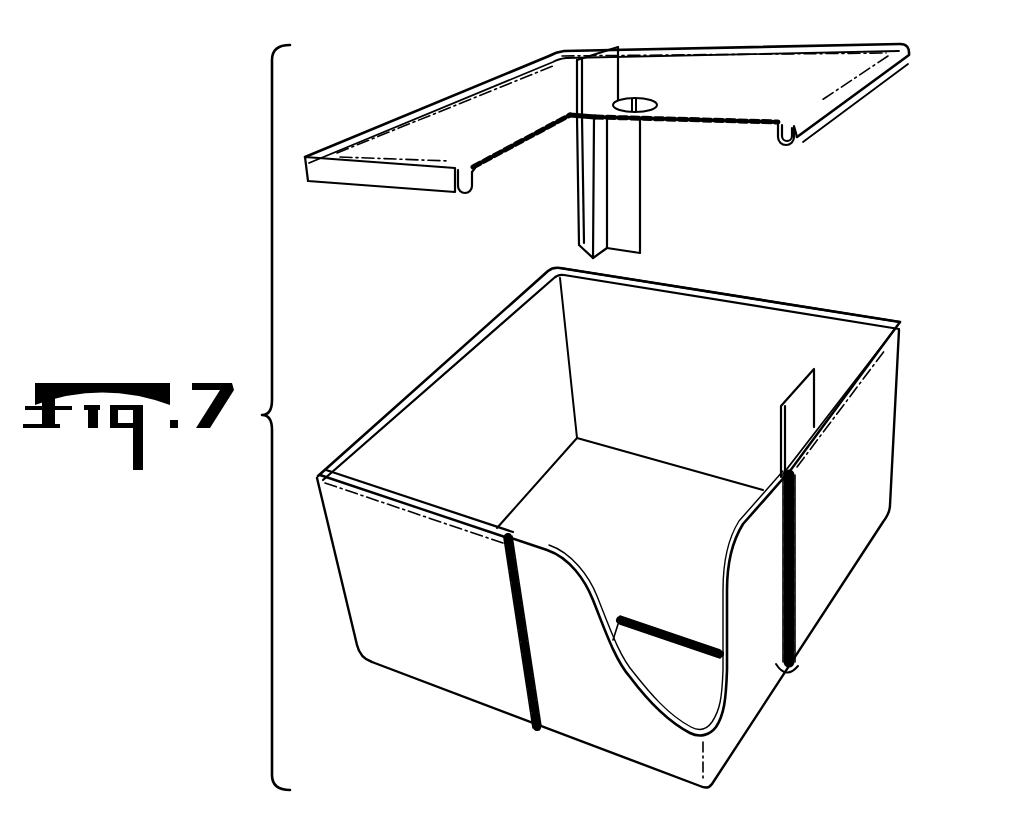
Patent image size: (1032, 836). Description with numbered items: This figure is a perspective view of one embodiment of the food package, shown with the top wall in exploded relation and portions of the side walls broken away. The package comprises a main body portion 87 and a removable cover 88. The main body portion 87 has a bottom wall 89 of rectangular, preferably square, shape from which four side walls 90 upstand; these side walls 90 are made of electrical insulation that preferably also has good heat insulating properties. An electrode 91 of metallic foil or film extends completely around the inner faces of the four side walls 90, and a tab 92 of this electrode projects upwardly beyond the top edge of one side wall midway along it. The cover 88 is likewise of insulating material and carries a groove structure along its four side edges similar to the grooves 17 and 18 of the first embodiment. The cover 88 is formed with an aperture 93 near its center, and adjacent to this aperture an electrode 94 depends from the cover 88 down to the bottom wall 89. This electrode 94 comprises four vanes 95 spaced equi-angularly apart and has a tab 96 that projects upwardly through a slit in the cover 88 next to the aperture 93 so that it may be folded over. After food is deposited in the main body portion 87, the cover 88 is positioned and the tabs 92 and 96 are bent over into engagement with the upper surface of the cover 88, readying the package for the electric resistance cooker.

The groove 17 is at (796, 139).
The groove 18 is at (783, 124).
The main body portion 87 is at (456, 709).
The removable cover 88 is at (768, 85).
The bottom wall 89 is at (623, 528).
The side walls 90 is at (448, 360).
The electrode 91 is at (797, 330).
The tab 92 is at (810, 407).
The aperture 93 is at (660, 104).
The electrode 94 is at (578, 208).
The vanes 95 is at (622, 175).
The tab 96 is at (594, 78).